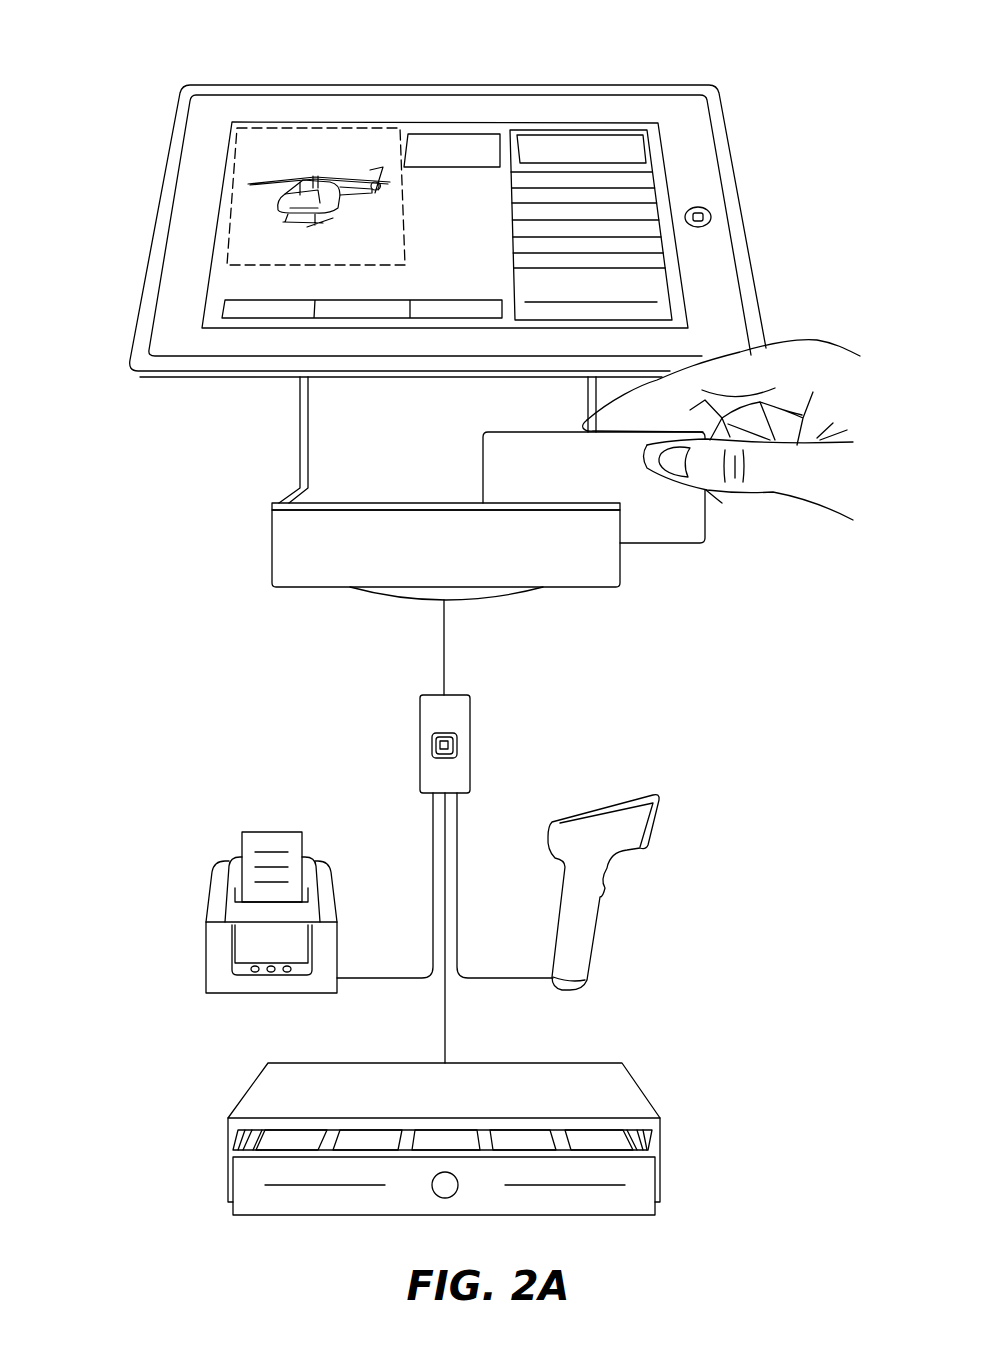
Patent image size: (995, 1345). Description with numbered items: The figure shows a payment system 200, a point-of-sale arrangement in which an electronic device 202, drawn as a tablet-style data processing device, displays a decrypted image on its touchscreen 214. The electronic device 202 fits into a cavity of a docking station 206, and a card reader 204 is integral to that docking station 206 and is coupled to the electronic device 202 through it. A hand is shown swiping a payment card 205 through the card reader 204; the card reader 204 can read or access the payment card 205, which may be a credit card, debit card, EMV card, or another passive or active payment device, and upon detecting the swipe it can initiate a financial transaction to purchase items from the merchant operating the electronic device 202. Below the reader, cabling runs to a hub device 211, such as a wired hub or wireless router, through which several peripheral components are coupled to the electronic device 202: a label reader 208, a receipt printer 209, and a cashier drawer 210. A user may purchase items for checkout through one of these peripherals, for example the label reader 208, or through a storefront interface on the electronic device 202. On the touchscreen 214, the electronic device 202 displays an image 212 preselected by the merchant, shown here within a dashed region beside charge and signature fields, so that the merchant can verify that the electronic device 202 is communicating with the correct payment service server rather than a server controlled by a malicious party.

The payment system 200 is at (135, 62).
The electronic device 202 is at (638, 95).
The card reader 204 is at (593, 577).
The payment card 205 is at (693, 537).
The docking station 206 is at (720, 145).
The label reader 208 is at (598, 937).
The receipt printer 209 is at (205, 921).
The cashier drawer 210 is at (653, 1103).
The hub device 211 is at (472, 737).
The image 212 is at (397, 128).
The touchscreen 214 is at (508, 123).